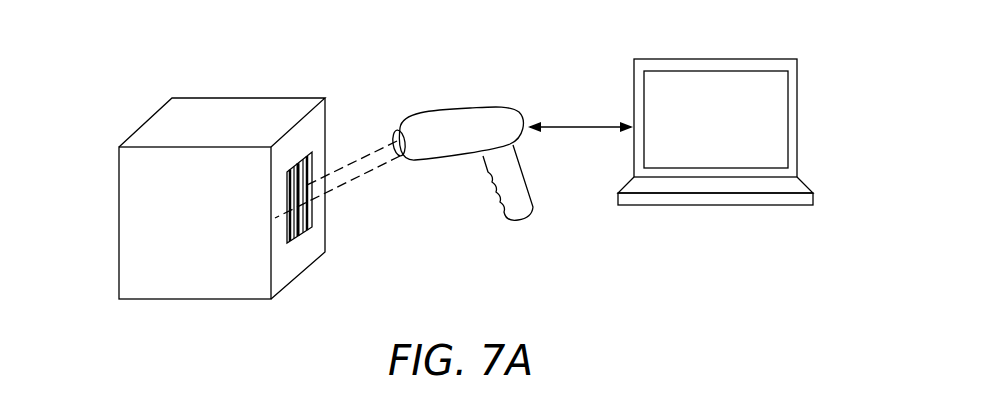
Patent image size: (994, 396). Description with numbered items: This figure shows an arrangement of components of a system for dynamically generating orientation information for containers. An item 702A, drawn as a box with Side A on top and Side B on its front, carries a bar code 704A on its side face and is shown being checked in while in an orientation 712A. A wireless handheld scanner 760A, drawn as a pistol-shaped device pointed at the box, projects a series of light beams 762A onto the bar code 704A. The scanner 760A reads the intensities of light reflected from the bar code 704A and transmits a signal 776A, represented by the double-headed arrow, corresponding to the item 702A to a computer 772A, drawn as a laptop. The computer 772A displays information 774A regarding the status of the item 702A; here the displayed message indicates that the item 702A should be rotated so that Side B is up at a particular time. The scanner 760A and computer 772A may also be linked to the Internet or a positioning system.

The item 702A is at (119, 70).
The orientation 712A is at (158, 113).
The bar code 704A is at (297, 233).
The wireless handheld scanner 760A is at (462, 108).
The light beams 762A is at (363, 183).
The computer 772A is at (714, 59).
The information 774A is at (785, 114).
The signal 776A is at (580, 124).